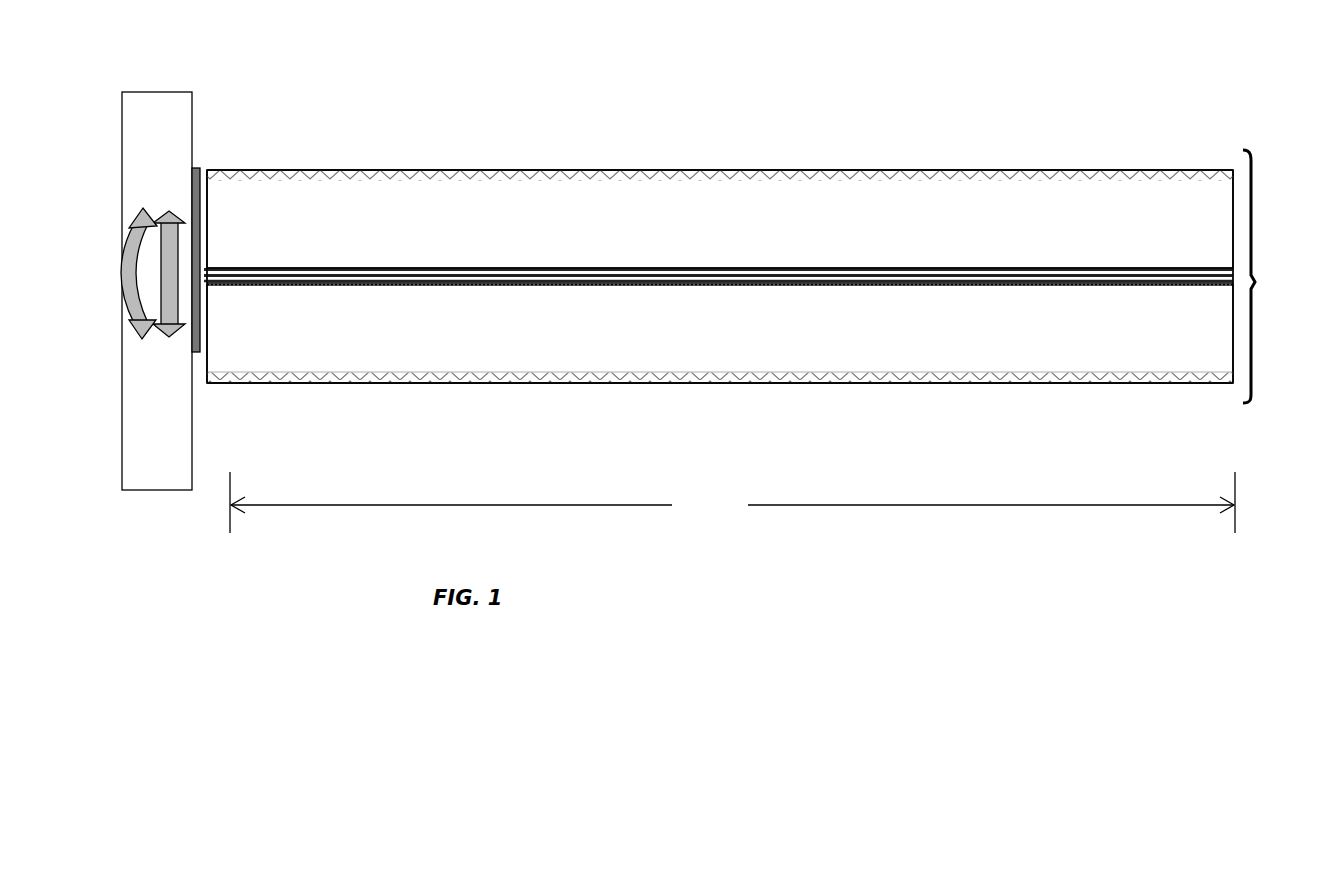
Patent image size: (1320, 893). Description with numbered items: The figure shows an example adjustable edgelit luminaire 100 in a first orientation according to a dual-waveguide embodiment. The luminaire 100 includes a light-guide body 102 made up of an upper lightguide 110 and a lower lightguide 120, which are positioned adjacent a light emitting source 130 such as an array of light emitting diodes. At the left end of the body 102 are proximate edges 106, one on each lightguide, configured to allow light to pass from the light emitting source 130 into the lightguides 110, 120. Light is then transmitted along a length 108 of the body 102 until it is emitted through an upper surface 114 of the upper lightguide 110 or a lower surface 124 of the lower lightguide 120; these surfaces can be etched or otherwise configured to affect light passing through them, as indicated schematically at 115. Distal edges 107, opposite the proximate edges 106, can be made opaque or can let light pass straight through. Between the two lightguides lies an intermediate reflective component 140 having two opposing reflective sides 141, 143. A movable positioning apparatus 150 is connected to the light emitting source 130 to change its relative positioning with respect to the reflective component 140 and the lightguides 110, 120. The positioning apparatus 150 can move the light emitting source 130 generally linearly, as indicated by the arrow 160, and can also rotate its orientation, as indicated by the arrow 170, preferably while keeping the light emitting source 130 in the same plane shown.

The adjustable edgelit luminaire 100 is at (972, 86).
The light-guide body 102 is at (1256, 281).
The proximate edges 106 is at (230, 222).
The distal edges 107 is at (1222, 205).
The length of the body 108 is at (732, 502).
The upper lightguide 110 is at (585, 169).
The upper surface 114 is at (792, 162).
The surface configuration 115 is at (965, 378).
The lower lightguide 120 is at (838, 384).
The lower surface 124 is at (1052, 390).
The light emitting source 130 is at (196, 205).
The reflective component 140 is at (500, 270).
The reflective side 141 is at (1037, 264).
The reflective side 143 is at (742, 290).
The movable positioning apparatus 150 is at (168, 92).
The linear motion indication 160 is at (170, 203).
The rotational motion indication 170 is at (142, 348).